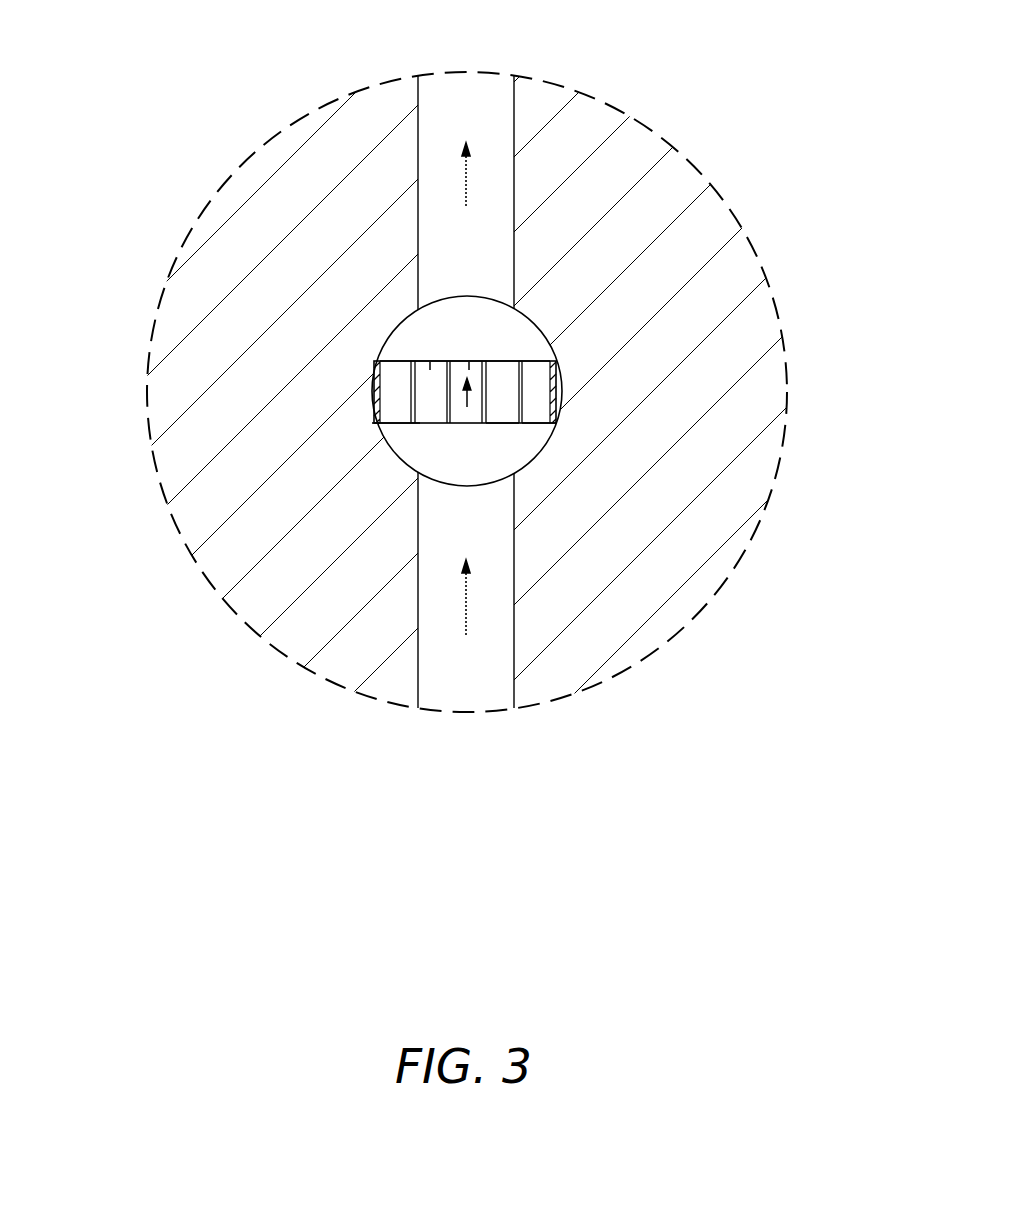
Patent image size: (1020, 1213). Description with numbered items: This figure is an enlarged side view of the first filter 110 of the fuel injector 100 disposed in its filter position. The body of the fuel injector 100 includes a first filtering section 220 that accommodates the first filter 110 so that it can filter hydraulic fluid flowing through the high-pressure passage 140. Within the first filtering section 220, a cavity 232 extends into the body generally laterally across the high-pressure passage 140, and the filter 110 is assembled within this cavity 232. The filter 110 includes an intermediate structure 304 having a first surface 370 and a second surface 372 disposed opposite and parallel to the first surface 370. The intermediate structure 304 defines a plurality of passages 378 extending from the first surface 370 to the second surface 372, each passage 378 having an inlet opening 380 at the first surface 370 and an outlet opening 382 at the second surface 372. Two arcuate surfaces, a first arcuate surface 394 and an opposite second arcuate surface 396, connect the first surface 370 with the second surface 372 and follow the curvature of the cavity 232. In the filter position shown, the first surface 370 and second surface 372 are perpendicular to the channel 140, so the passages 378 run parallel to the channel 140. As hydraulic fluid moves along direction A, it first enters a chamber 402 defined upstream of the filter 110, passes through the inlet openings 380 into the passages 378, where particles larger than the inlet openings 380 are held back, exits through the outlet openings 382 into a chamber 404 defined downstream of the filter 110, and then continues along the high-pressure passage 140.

The fuel injector 100 is at (207, 262).
The first filter 110 is at (577, 399).
The high-pressure passage 140 is at (495, 130).
The first filtering section 220 is at (690, 148).
The cavity 232 is at (398, 340).
The intermediate structure 304 is at (500, 434).
The first surface 370 is at (555, 421).
The second surface 372 is at (505, 359).
The passages 378 is at (381, 427).
The inlet opening 380 is at (469, 431).
The outlet opening 382 is at (469, 358).
The first arcuate surface 394 is at (374, 386).
The second arcuate surface 396 is at (558, 386).
The chamber 402 is at (407, 450).
The chamber 404 is at (495, 327).